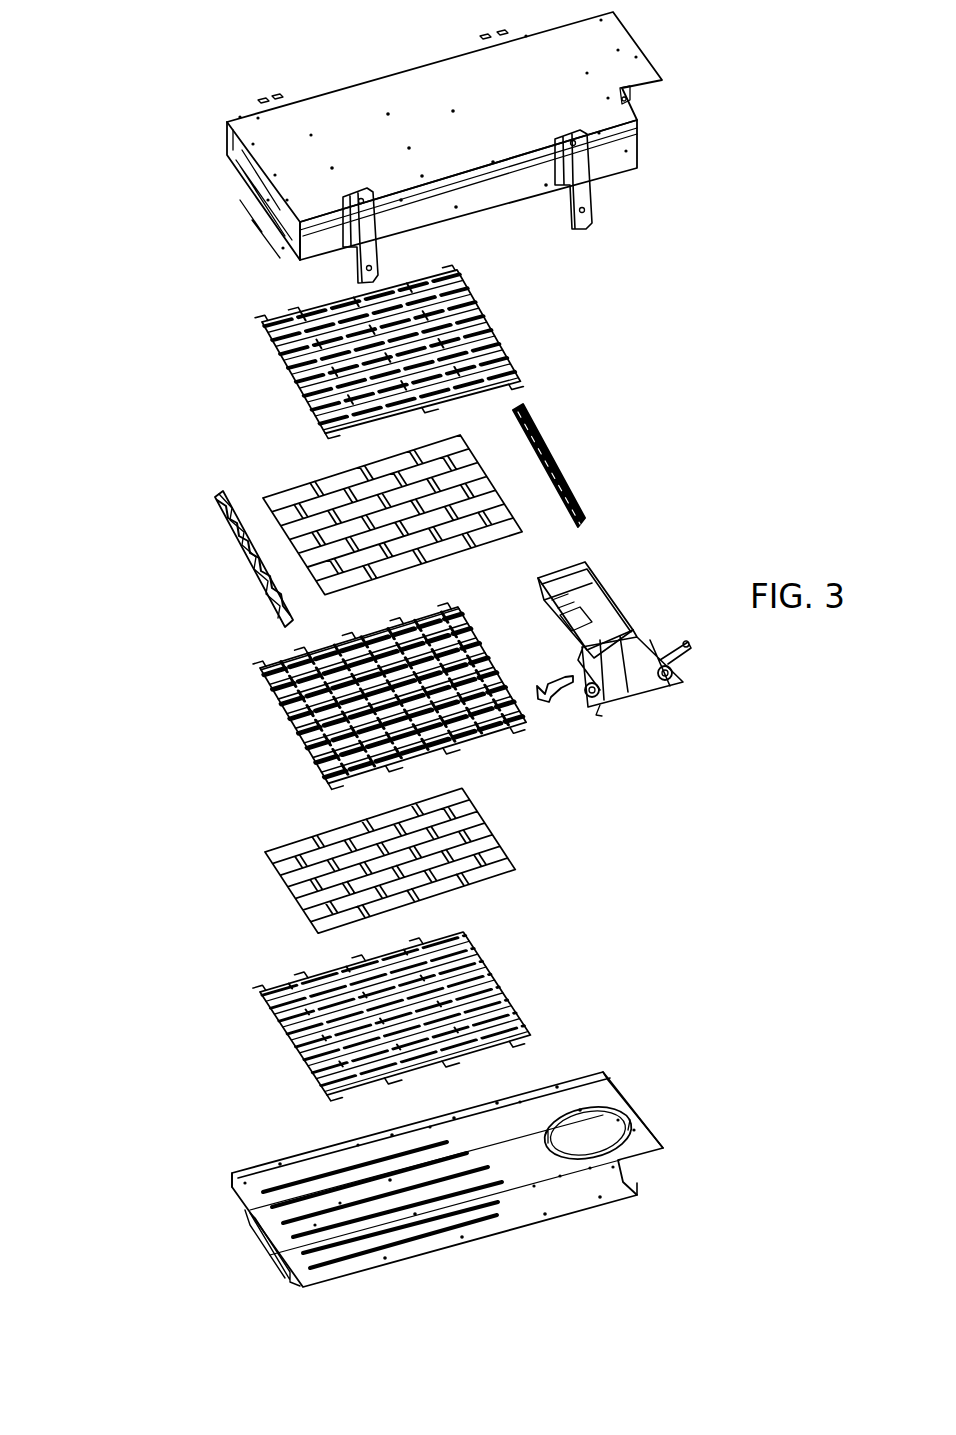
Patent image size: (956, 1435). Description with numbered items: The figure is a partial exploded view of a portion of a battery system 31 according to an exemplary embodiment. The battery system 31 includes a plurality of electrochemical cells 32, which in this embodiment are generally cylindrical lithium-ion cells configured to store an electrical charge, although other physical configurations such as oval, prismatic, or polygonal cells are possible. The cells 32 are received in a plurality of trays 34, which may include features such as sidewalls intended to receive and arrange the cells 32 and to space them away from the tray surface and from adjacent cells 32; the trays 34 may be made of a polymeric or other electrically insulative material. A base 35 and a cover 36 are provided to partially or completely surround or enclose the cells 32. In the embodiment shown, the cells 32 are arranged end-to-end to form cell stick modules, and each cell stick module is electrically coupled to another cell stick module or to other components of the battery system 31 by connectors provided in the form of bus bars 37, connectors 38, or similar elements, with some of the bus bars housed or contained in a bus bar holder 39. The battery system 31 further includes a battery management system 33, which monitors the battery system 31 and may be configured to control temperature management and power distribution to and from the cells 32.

The battery system 31 is at (173, 122).
The electrochemical cells 32 is at (292, 486).
The battery management system 33 is at (596, 585).
The trays 34 is at (276, 351).
The base 35 is at (626, 1100).
The cover 36 is at (385, 75).
The bus bars 37 is at (213, 520).
The connectors 38 is at (562, 694).
The bus bar holder 39 is at (531, 420).